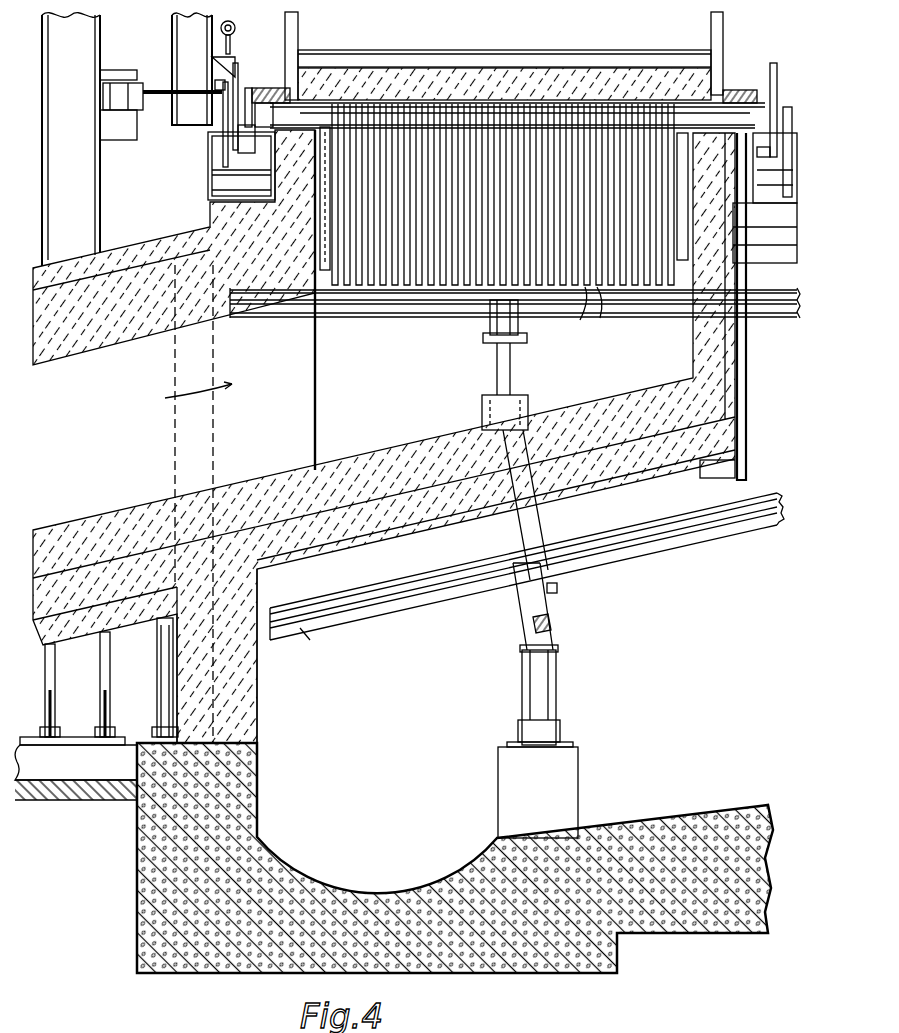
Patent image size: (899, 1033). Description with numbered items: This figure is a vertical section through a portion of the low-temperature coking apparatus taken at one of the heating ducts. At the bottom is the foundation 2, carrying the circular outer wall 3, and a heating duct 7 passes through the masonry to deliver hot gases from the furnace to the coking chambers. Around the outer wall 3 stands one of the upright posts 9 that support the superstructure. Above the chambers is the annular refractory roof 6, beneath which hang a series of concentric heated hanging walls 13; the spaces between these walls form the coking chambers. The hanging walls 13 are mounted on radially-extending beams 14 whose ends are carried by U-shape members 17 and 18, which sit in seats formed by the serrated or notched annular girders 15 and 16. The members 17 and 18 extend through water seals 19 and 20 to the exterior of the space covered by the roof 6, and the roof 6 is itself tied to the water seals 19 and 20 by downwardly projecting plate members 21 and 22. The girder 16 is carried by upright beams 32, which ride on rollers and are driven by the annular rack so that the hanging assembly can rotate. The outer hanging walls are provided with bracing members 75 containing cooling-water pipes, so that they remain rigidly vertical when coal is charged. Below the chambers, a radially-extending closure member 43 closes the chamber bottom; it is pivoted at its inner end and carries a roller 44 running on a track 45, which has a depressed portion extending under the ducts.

The foundation 2 is at (400, 892).
The circular outer wall 3 is at (258, 708).
The annular roof 6 is at (528, 85).
The heating duct 7 is at (174, 411).
The upright post 9 is at (68, 229).
The heated hanging wall 13 is at (470, 287).
The radially-extending beam 14 is at (700, 103).
The annular girder 15 is at (794, 115).
The annular girder 16 is at (215, 88).
The U-shape member 17 is at (765, 233).
The U-shape member 18 is at (240, 168).
The water seal 19 is at (765, 190).
The water seal 20 is at (215, 200).
The downwardly projecting plate member 21 is at (515, 294).
The downwardly projecting plate member 22 is at (243, 133).
The upright beam 32 is at (190, 43).
The closure member 43 is at (645, 548).
The roller 44 is at (548, 613).
The track 45 is at (552, 638).
The bracing member 75 is at (345, 288).